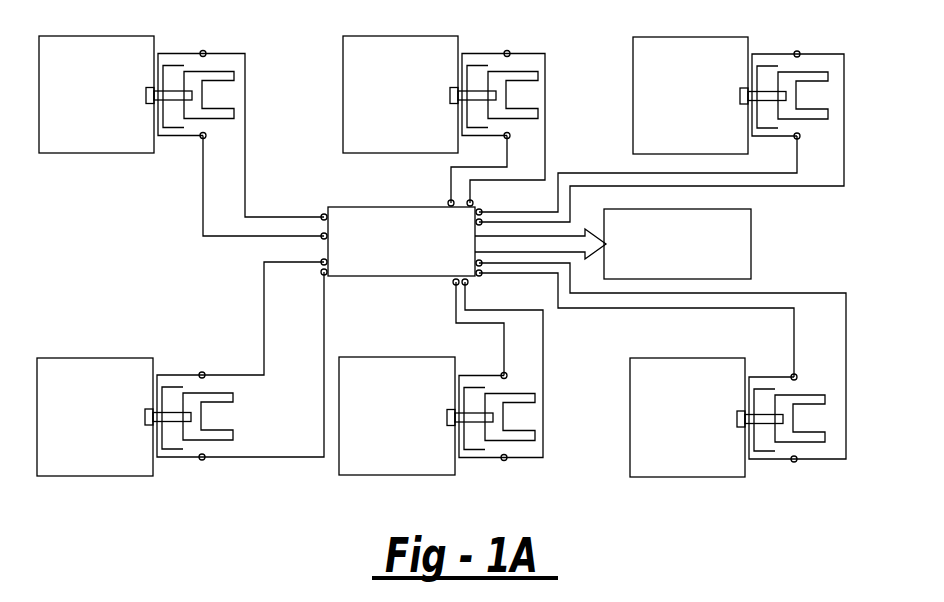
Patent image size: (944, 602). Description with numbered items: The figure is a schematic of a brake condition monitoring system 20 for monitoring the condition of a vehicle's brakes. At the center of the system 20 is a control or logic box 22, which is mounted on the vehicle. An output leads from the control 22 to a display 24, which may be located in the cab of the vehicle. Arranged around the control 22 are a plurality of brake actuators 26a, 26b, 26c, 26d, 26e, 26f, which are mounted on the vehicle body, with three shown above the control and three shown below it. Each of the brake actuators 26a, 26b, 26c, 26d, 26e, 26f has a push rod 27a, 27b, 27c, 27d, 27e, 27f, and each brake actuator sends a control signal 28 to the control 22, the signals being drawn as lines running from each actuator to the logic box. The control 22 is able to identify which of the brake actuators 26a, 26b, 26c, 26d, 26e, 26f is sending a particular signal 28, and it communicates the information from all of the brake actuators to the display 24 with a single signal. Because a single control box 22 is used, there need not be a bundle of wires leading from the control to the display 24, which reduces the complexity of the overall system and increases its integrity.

The brake condition monitoring system 20 is at (343, 515).
The control or logic box 22 is at (380, 206).
The display 24 is at (751, 230).
The brake actuator 26a is at (94, 148).
The brake actuator 26b is at (375, 48).
The brake actuator 26c is at (687, 45).
The brake actuator 26d is at (93, 368).
The brake actuator 26e is at (408, 462).
The brake actuator 26f is at (697, 465).
The push rod 27a is at (173, 95).
The push rod 27b is at (477, 95).
The push rod 27c is at (767, 95).
The push rod 27d is at (167, 415).
The push rod 27e is at (472, 417).
The push rod 27f is at (763, 418).
The control signal 28 is at (245, 156).